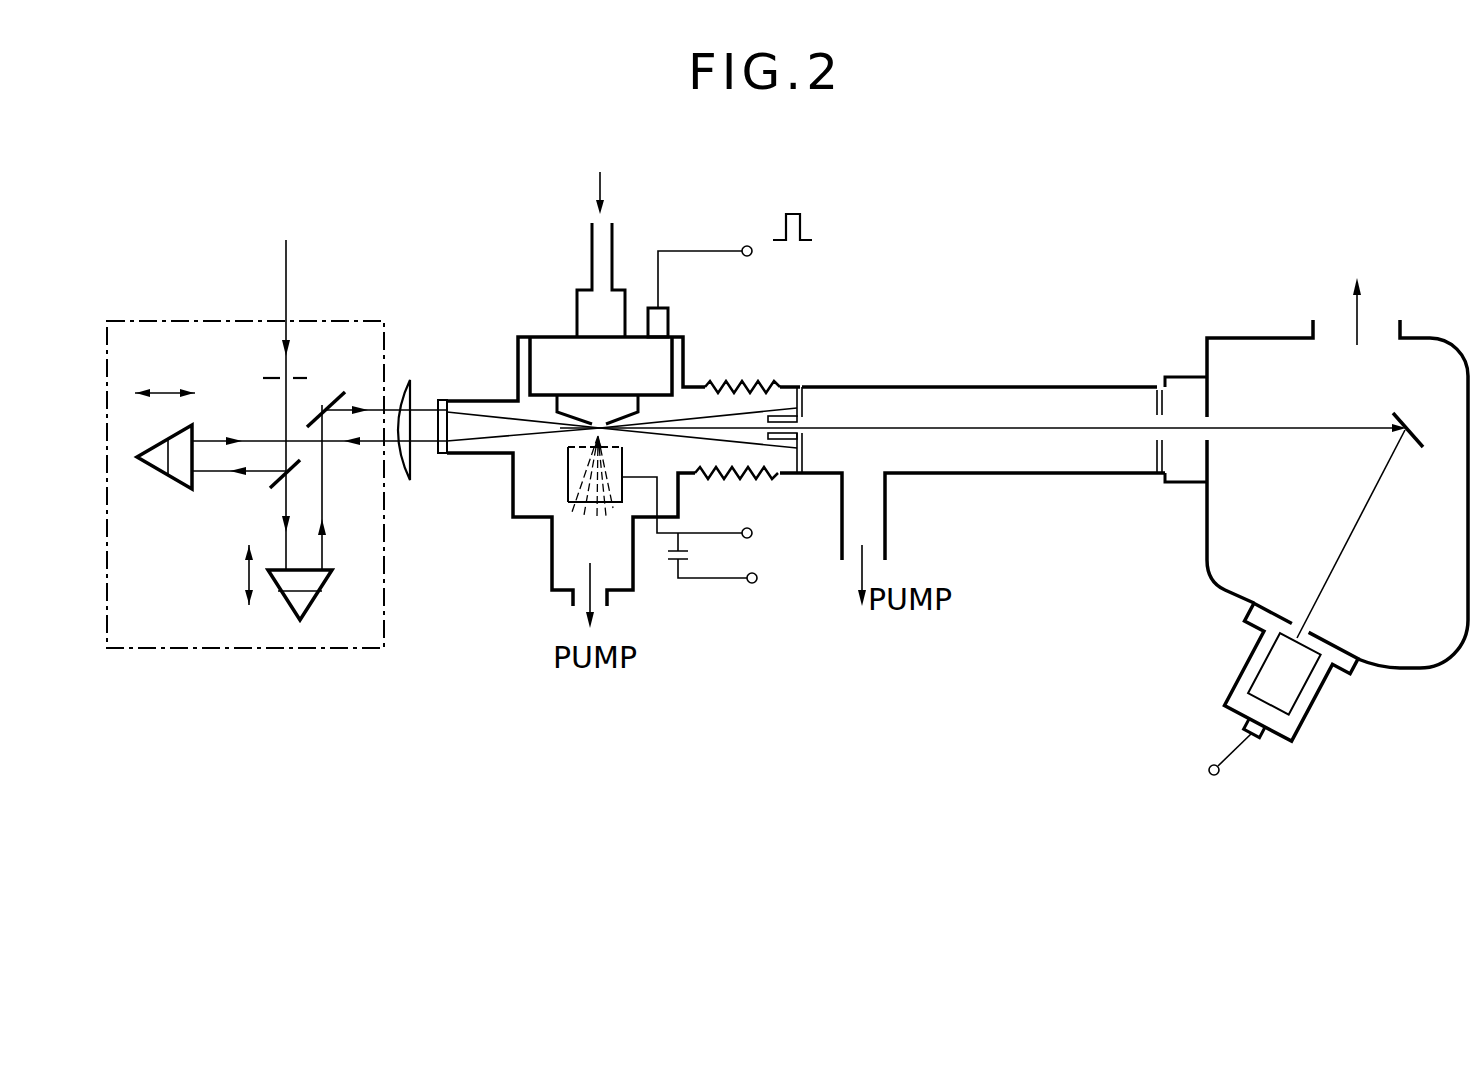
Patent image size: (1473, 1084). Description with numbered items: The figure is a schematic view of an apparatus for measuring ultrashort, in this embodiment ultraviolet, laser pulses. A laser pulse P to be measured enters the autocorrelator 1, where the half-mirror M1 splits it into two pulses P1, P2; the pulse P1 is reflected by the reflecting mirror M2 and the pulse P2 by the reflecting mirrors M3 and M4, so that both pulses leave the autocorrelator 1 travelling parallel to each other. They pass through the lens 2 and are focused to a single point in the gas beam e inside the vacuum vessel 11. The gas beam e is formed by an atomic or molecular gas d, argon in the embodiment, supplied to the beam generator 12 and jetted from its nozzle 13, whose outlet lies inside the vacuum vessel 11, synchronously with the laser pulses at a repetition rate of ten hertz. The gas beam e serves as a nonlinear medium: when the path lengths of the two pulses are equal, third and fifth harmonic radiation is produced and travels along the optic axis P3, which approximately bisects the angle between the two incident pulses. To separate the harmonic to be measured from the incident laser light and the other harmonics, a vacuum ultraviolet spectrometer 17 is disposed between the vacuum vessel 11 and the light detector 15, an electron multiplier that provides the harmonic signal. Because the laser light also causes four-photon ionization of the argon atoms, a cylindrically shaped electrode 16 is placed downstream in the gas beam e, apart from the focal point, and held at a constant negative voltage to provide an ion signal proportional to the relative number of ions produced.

The autocorrelator 1 is at (345, 322).
The lens 2 is at (412, 388).
The vacuum vessel 11 is at (790, 398).
The beam generator 12 is at (652, 358).
The nozzle 13 is at (607, 407).
The light detector 15 is at (1257, 690).
The electrode 16 is at (568, 480).
The vacuum ultraviolet spectrometer 17 is at (1232, 338).
The laser pulse P is at (279, 392).
The first split laser pulse P1 is at (215, 440).
The second split laser pulse P2 is at (322, 503).
The optic axis of harmonic radiation P3 is at (1014, 428).
The half-mirror M1 is at (273, 480).
The reflecting mirror M2 is at (172, 484).
The reflecting mirror M3 is at (313, 593).
The reflecting mirror M4 is at (330, 397).
The atomic or molecular gas d is at (600, 173).
The gas beam e is at (574, 468).